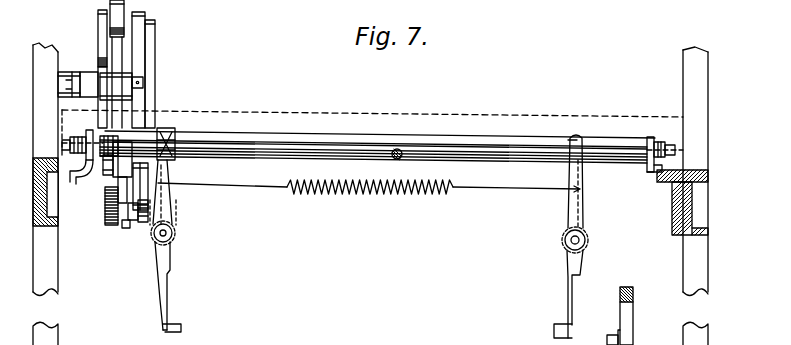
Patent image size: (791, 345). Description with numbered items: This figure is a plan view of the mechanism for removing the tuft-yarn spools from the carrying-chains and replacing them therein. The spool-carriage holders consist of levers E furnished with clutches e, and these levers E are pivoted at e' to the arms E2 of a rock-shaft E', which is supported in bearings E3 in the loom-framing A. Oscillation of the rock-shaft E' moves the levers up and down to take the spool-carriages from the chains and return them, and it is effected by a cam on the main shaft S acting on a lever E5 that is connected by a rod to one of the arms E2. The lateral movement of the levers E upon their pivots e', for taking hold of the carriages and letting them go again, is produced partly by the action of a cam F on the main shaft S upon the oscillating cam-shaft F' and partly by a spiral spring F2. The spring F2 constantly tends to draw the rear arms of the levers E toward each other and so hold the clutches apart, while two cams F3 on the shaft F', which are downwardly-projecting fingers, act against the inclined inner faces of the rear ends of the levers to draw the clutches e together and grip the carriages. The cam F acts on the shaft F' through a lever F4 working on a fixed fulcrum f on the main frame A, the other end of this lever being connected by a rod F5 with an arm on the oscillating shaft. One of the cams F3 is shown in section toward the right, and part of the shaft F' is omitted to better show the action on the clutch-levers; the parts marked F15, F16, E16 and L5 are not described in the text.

The main framing A is at (60, 252).
The main shaft S is at (294, 113).
The rock-shaft E' is at (377, 137).
The oscillating cam-shaft F' is at (373, 159).
The spiral spring F2 is at (369, 198).
The cams F3 is at (569, 150).
The lever F4 is at (99, 46).
The cam F is at (132, 64).
The fixed fulcrum f is at (100, 86).
The bearings E3 is at (656, 136).
The curved arm F16 is at (118, 172).
The block F15 is at (176, 133).
The rod F5 is at (105, 196).
The toothed segment E16 is at (137, 197).
The lever E5 is at (125, 236).
The spool-carriage holders E is at (373, 236).
The arms E2 is at (169, 192).
The pivots e' is at (369, 237).
The clutches e is at (367, 329).
The post L5 is at (632, 316).